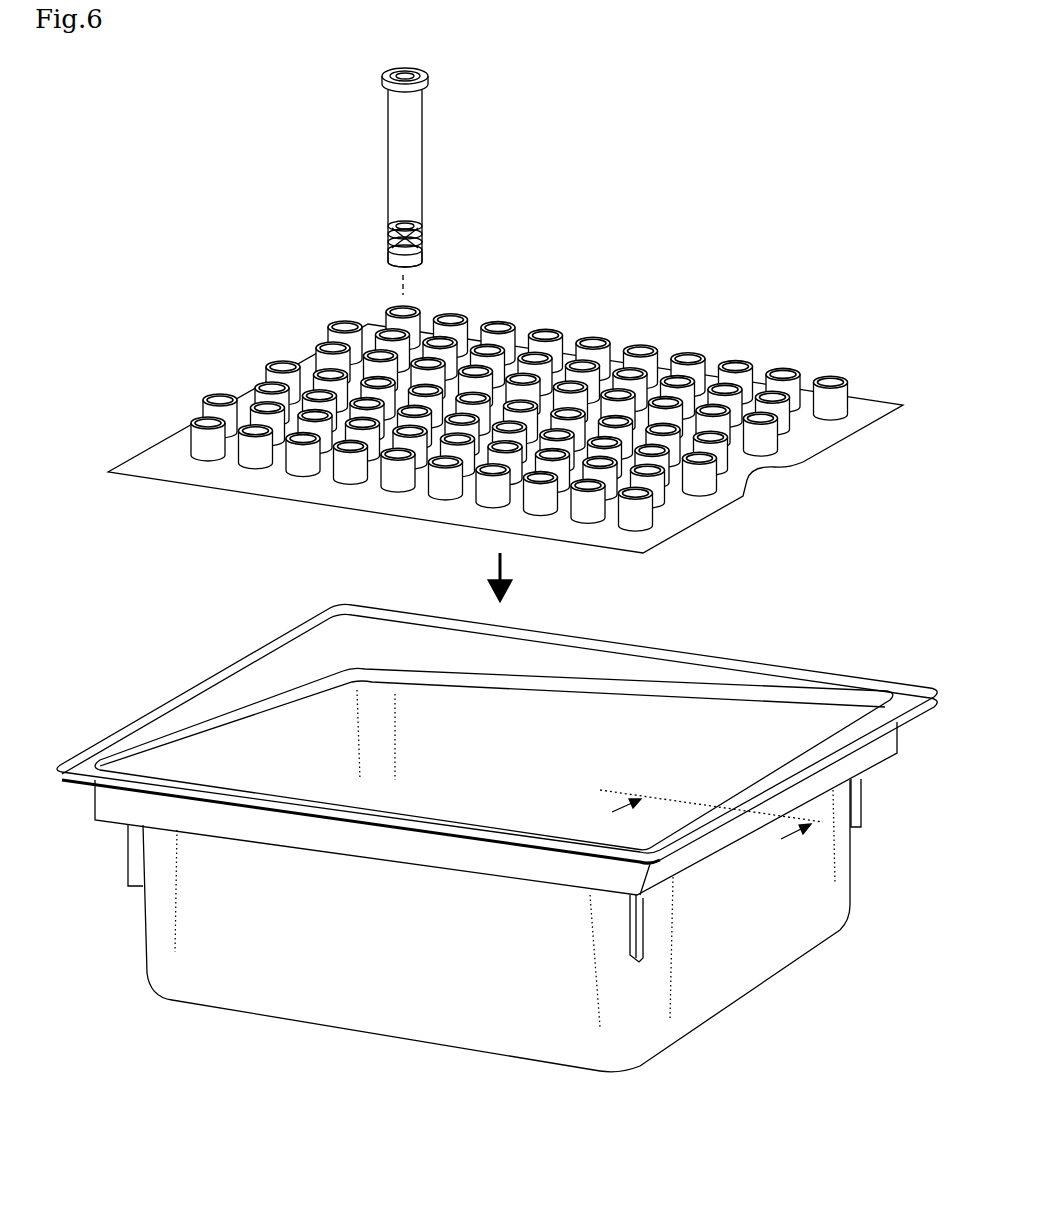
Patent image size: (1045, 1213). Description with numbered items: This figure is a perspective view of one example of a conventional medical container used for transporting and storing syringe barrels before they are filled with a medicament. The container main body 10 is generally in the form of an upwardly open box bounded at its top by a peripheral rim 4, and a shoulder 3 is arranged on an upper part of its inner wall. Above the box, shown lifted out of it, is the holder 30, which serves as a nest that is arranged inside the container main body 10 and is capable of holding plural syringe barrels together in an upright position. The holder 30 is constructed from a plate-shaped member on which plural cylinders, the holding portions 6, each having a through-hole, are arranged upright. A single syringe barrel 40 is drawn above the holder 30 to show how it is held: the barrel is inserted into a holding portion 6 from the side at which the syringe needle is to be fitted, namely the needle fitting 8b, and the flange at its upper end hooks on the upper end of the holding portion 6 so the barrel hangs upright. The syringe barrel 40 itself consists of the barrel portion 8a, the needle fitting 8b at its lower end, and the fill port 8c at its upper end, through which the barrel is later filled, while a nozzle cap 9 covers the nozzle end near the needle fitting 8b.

The syringe barrel 40 is at (317, 175).
The barrel portion of syringe barrel 8a is at (398, 140).
The needle fitting 8b is at (382, 237).
The fill port of syringe barrel 8c is at (393, 67).
The nozzle cap 9 is at (355, 245).
The holder 30 is at (506, 422).
The holding portion 6 is at (842, 395).
The peripheral rim 4 is at (297, 643).
The main body of container 10 is at (497, 821).
The shoulder 3 is at (600, 707).